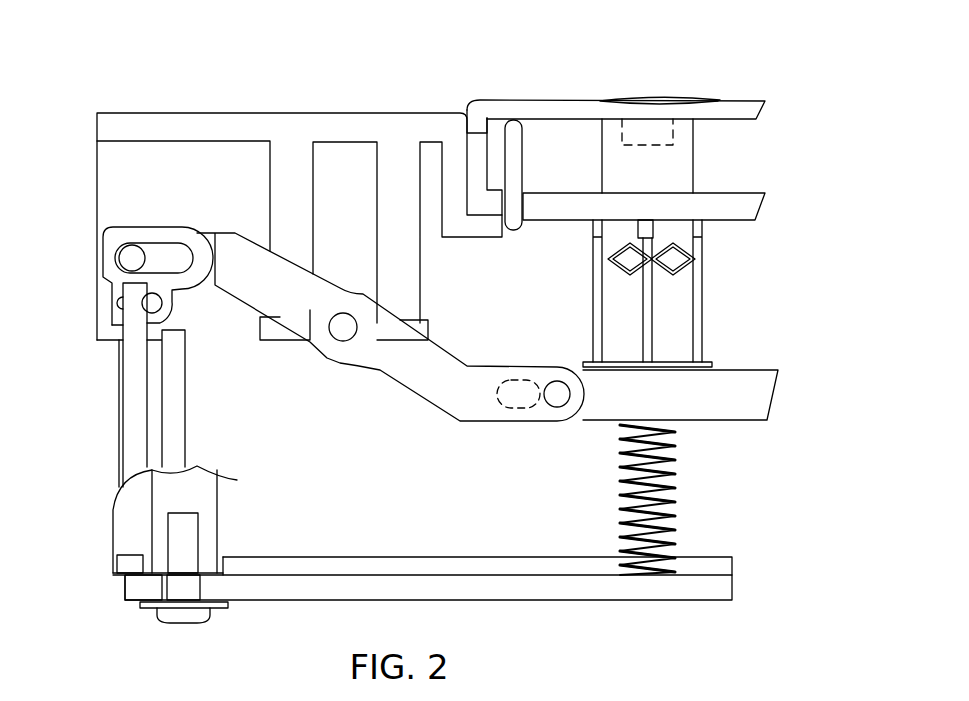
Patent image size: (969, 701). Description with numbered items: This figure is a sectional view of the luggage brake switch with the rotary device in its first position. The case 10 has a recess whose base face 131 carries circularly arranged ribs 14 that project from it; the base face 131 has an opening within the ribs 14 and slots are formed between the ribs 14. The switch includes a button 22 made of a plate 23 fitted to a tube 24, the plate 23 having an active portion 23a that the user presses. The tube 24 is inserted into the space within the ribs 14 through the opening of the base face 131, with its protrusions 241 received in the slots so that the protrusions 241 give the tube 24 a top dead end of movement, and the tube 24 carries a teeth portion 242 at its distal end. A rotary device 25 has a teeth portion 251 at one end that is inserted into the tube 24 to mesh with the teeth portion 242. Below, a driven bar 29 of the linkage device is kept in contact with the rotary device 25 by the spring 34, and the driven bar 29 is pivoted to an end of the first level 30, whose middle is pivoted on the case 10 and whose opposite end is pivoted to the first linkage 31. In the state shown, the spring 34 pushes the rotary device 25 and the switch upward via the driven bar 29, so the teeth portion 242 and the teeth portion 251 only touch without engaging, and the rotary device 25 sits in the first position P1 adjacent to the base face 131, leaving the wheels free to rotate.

The case 10 is at (233, 114).
The base face 131 is at (558, 190).
The button 22 is at (826, 84).
The plate 23 is at (743, 110).
The active portion 23a is at (627, 100).
The tube 24 is at (683, 167).
The protrusions 241 is at (653, 237).
The ribs 14 is at (677, 232).
The teeth portion 242 is at (657, 280).
The teeth portion 251 is at (728, 329).
The rotary device 25 is at (687, 345).
The driven bar 29 is at (740, 415).
The first level 30 is at (387, 373).
The first linkage 31 is at (133, 422).
The spring 34 is at (677, 529).
The first position P1 is at (586, 301).